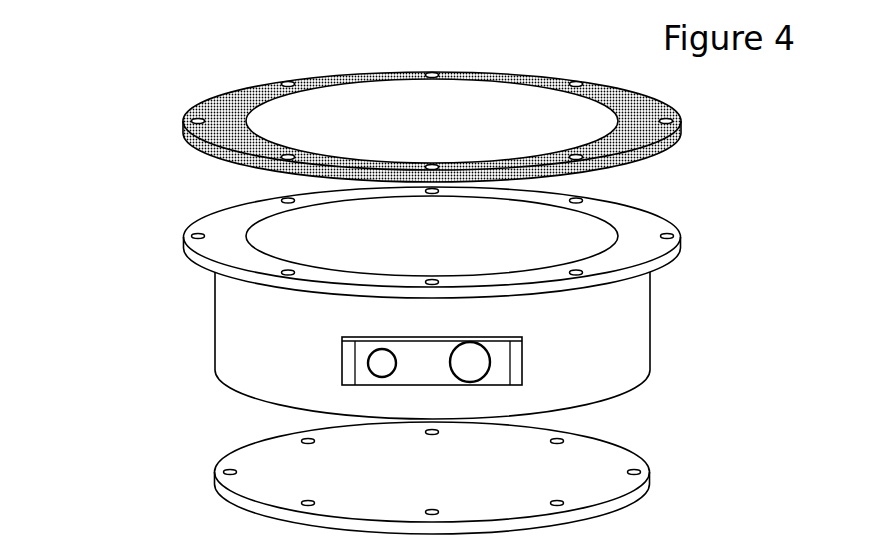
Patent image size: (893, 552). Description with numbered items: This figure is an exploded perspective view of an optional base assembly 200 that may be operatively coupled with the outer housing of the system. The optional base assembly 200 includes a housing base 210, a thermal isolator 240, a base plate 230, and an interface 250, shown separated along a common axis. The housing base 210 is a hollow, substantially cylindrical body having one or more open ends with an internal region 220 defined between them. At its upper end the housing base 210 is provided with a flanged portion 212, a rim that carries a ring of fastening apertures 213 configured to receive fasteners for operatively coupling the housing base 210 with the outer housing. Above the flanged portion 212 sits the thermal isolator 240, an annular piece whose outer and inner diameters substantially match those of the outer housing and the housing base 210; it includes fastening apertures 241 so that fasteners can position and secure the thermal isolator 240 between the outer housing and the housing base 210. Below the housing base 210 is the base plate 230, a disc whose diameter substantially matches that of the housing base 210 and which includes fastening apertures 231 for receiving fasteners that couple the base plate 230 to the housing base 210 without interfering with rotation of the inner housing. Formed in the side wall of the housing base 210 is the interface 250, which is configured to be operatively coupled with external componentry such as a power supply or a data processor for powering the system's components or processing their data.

The optional base assembly 200 is at (121, 360).
The housing base 210 is at (292, 351).
The flanged portion 212 is at (175, 244).
The fastening apertures 213 is at (193, 222).
The internal region 220 is at (536, 220).
The base plate 230 is at (451, 485).
The fastening apertures 231 is at (223, 459).
The thermal isolator 240 is at (198, 90).
The fastening apertures 241 is at (278, 74).
The interface 250 is at (434, 376).